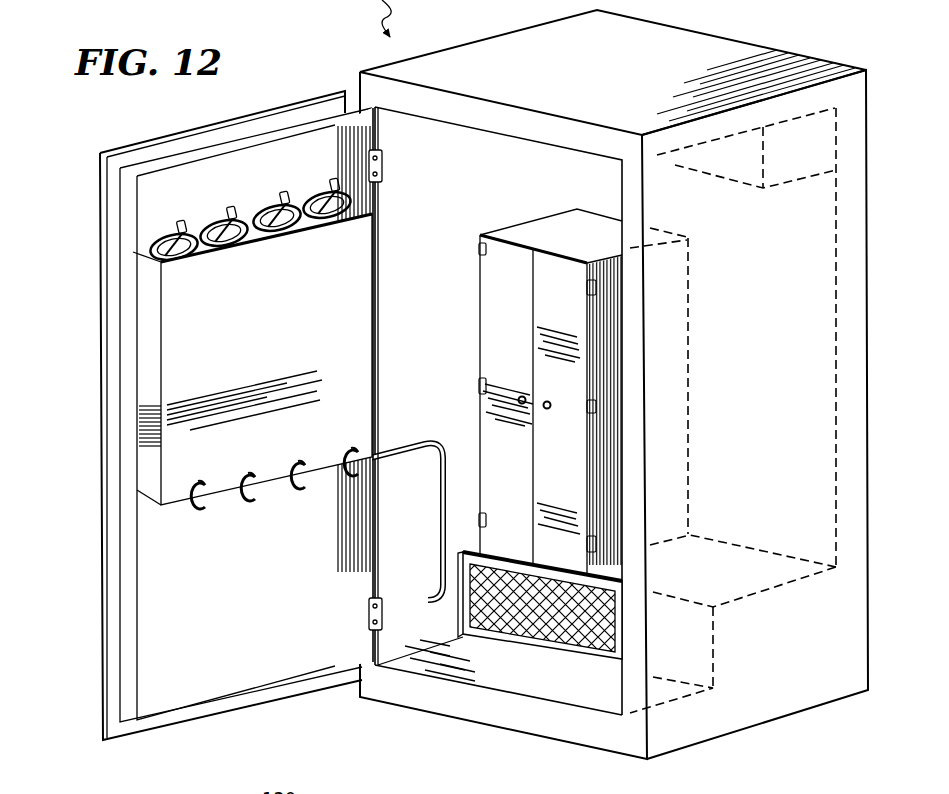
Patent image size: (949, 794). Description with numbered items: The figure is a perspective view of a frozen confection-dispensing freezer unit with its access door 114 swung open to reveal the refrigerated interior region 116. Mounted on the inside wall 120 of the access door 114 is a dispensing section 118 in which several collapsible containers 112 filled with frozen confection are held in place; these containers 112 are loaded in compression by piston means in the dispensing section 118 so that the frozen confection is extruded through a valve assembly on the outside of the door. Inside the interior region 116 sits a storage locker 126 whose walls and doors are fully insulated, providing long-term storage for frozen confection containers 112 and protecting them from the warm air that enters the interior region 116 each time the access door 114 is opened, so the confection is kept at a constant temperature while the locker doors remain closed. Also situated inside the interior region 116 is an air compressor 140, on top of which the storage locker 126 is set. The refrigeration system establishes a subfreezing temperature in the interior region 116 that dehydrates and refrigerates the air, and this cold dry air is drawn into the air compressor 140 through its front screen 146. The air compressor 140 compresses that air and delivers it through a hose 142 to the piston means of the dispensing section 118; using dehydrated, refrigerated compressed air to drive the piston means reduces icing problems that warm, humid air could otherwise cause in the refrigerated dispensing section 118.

The collapsible containers 112 is at (285, 191).
The access door 114 is at (773, 195).
The interior region 116 is at (515, 177).
The dispensing section 118 is at (178, 522).
The inside wall 120 is at (270, 652).
The storage locker 126 is at (453, 247).
The air compressor 140 is at (588, 681).
The hose 142 is at (441, 512).
The front screen 146 is at (518, 648).